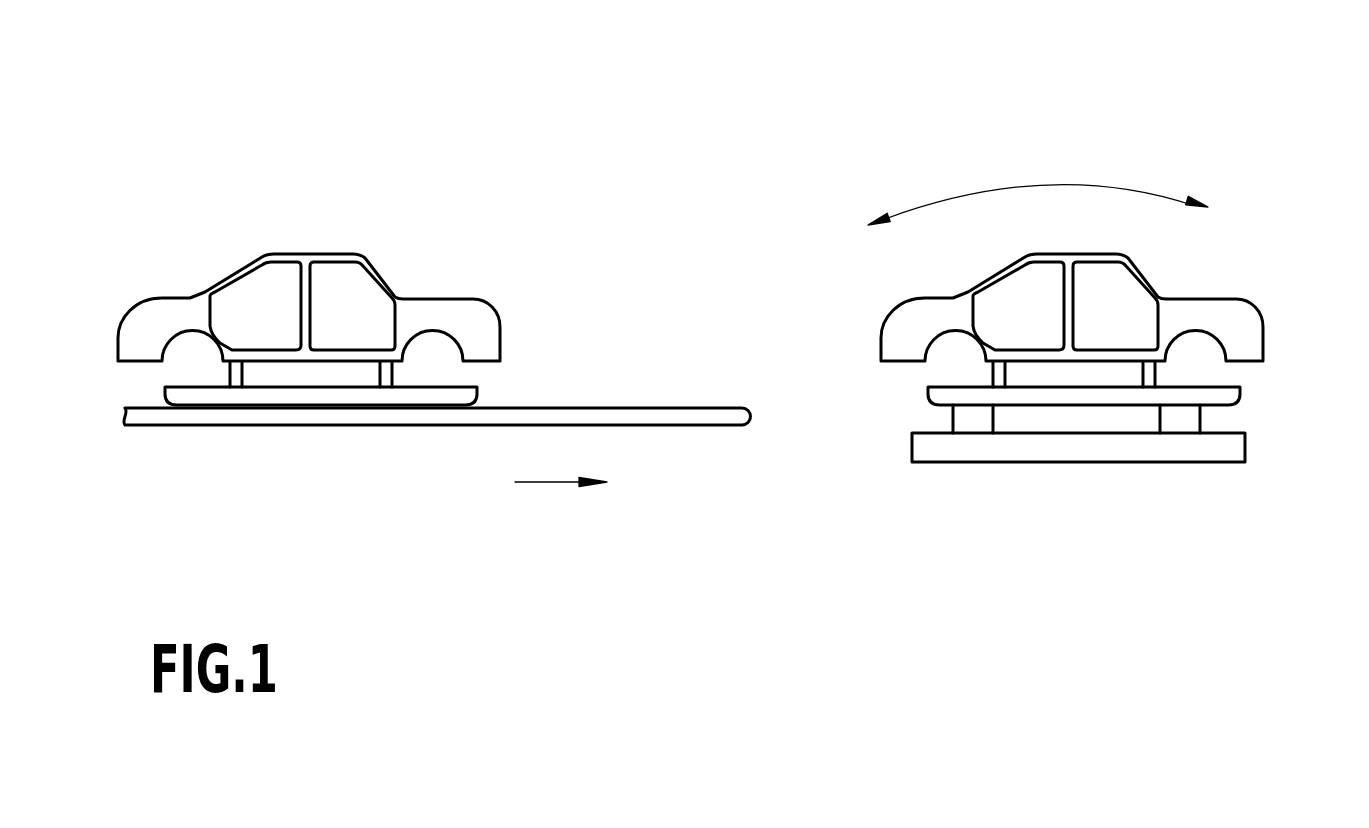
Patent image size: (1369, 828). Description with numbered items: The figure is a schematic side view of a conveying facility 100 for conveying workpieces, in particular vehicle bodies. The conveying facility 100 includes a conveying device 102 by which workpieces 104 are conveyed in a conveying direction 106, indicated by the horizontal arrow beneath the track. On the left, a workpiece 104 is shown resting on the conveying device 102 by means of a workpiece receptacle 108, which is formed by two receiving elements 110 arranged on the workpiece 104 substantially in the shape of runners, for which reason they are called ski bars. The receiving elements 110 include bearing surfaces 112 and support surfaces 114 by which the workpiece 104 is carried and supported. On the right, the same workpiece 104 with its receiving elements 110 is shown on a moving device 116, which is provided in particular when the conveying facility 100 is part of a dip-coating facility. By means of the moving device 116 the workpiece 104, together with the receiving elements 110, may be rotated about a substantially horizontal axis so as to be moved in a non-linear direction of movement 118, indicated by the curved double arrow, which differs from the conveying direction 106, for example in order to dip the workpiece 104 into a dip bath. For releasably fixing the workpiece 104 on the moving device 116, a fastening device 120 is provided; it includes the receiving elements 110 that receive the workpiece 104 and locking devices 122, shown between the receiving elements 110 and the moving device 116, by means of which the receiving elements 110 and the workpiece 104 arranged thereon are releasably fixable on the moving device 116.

The conveying facility 100 is at (1098, 120).
The conveying device 102 is at (506, 416).
The workpiece 104 is at (415, 315).
The conveying direction 106 is at (545, 482).
The workpiece receptacle 108 is at (527, 370).
The receiving element 110 is at (227, 393).
The bearing surface 112 is at (320, 408).
The support surface 114 is at (390, 407).
The moving device 116 is at (1215, 450).
The direction of movement 118 is at (1033, 187).
The fastening device 120 is at (1268, 398).
The locking device 122 is at (975, 420).